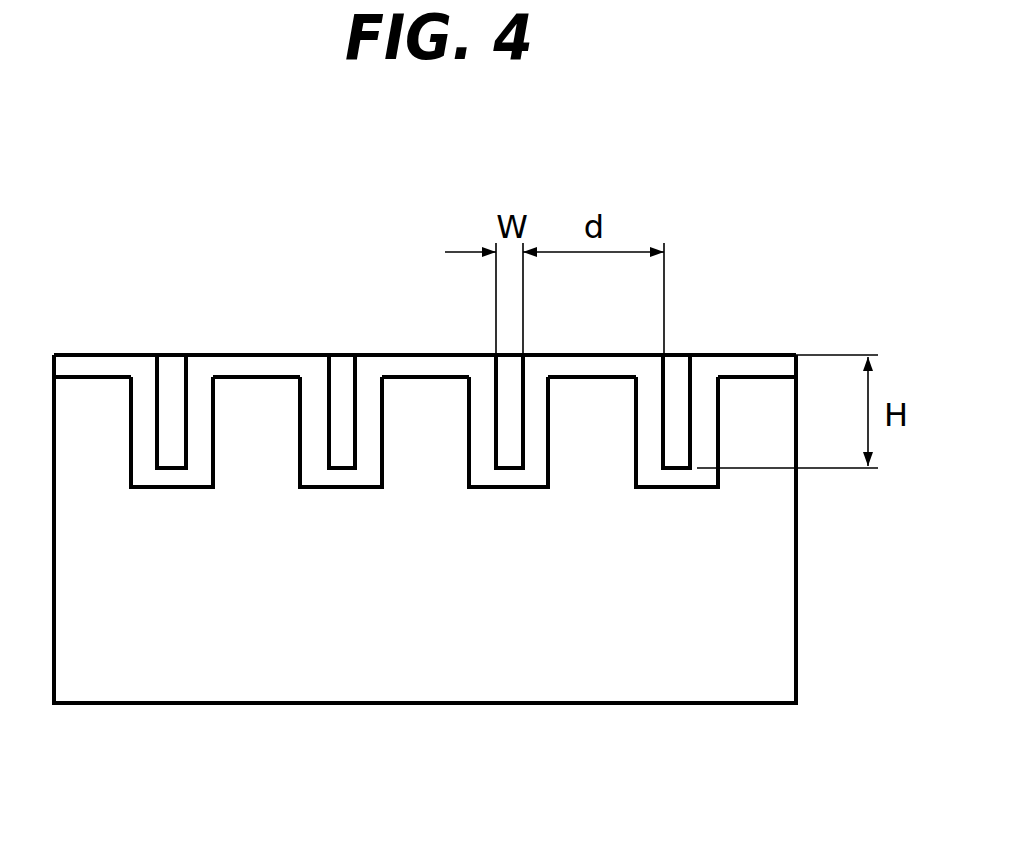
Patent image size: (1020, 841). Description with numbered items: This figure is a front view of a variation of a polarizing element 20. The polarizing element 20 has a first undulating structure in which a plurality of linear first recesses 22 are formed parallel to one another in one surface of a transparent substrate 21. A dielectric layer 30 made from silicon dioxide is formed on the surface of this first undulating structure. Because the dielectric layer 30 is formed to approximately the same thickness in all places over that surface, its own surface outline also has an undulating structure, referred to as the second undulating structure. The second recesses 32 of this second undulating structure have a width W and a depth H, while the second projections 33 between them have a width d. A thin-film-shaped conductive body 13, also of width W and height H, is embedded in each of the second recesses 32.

The polarizing element 20 is at (332, 228).
The transparent substrate 21 is at (765, 632).
The first recesses 22 is at (335, 487).
The dielectric layer 30 is at (740, 366).
The second recesses 32 is at (523, 455).
The second projections 33 is at (600, 353).
The conductive body 13 is at (172, 366).